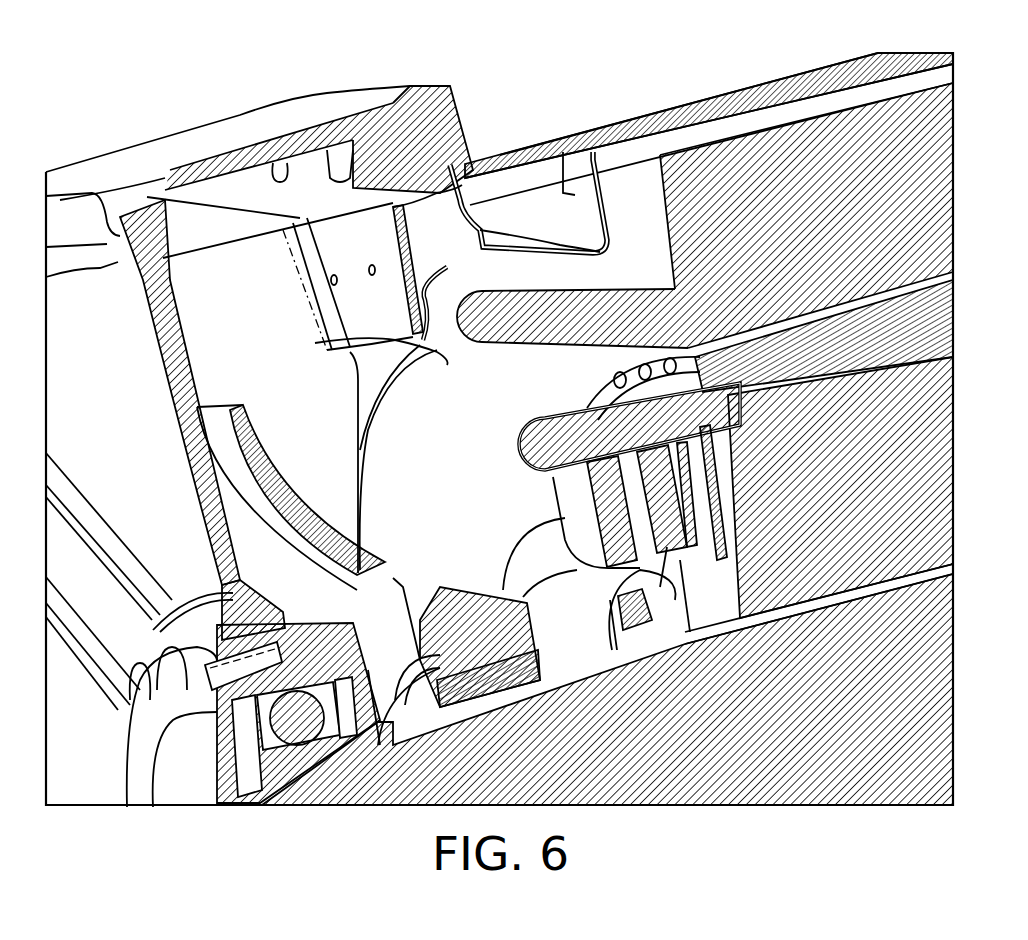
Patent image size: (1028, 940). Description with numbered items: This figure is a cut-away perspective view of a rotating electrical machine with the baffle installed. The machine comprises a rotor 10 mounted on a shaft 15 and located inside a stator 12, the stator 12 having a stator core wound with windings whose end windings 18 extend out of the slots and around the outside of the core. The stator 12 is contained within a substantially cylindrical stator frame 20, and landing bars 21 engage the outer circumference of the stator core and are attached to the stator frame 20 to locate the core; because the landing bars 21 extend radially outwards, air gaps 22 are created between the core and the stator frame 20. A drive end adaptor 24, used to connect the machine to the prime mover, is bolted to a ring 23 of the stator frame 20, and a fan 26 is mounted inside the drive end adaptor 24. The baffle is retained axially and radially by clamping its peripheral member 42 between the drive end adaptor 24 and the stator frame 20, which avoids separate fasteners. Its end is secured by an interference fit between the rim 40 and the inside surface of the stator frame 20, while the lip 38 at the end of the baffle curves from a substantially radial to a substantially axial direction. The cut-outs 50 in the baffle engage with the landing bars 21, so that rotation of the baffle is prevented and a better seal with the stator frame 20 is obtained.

The rotor 10 is at (955, 425).
The stator 12 is at (955, 179).
The shaft 15 is at (955, 680).
The end windings 18 is at (533, 347).
The stator frame 20 is at (783, 88).
The landing bars 21 is at (955, 58).
The air gaps 22 is at (955, 85).
The ring 23 is at (404, 85).
The drive end adaptor 24 is at (241, 116).
The fan 26 is at (350, 302).
The lip 38 is at (420, 348).
The rim 40 is at (592, 150).
The peripheral member 42 is at (393, 213).
The cut-outs 50 is at (557, 186).